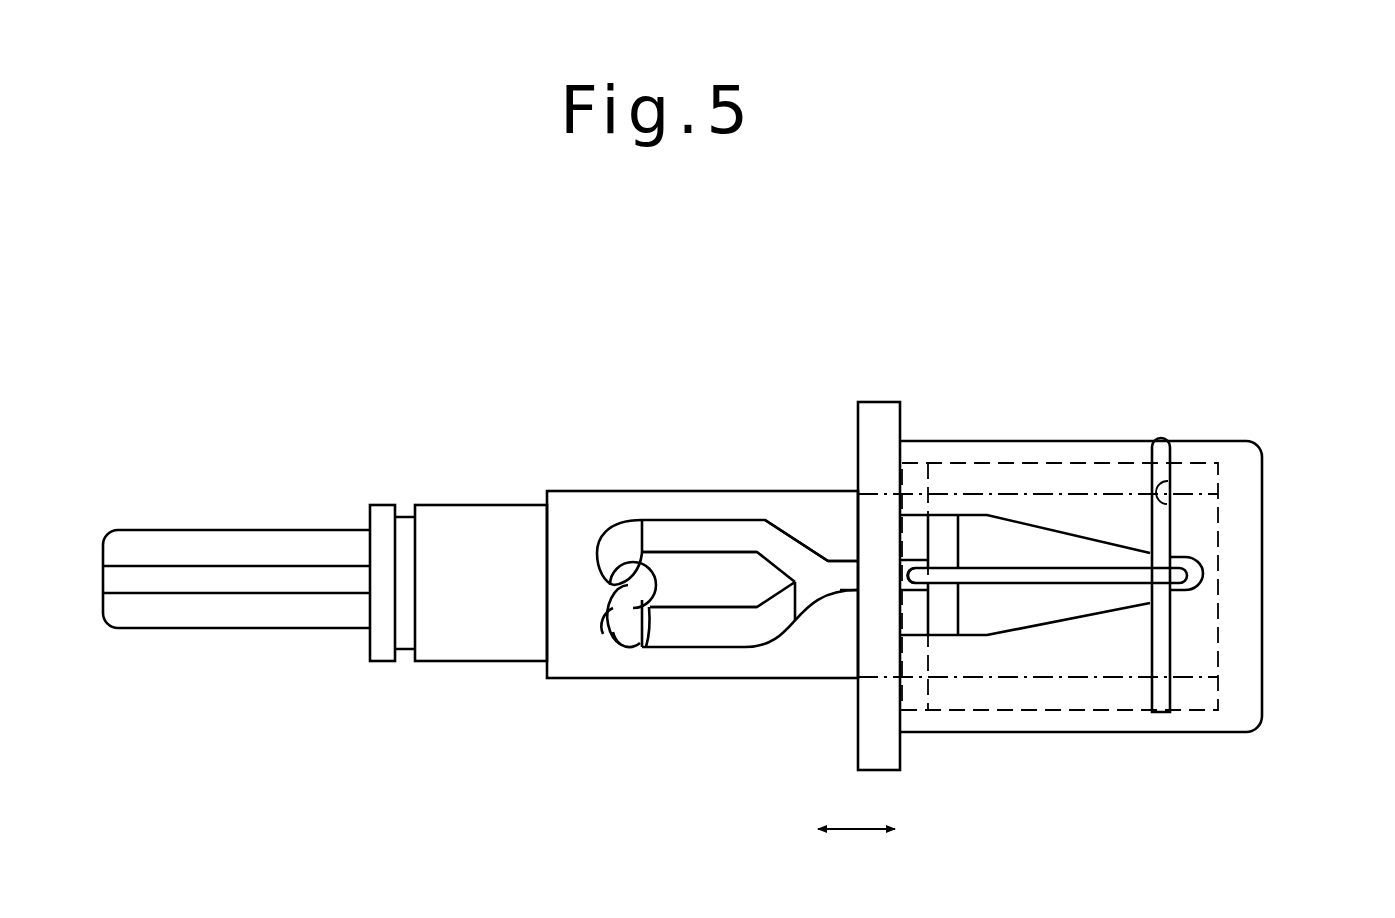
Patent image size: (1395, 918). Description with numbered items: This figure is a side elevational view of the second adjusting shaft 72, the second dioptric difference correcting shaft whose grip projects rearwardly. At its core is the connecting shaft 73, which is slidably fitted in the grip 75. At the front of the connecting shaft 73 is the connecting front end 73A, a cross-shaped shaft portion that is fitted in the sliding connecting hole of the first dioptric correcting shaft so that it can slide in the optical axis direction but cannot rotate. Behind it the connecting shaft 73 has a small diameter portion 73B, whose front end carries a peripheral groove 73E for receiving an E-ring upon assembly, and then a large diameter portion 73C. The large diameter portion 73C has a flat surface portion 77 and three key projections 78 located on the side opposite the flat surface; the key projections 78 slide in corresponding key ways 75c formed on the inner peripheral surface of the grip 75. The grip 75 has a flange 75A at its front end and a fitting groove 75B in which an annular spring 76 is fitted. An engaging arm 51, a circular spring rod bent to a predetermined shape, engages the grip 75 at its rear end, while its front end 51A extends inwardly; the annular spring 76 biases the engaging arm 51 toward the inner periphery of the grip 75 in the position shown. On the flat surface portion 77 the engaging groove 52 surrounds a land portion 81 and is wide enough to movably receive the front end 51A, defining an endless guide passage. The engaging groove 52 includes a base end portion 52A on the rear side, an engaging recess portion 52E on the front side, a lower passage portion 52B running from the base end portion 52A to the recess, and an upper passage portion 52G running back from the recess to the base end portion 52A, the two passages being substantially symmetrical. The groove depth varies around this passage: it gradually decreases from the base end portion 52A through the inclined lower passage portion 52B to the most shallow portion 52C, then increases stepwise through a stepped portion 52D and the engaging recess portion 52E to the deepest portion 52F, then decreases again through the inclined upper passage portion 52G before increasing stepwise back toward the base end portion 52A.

The second adjusting shaft 72 is at (862, 267).
The connecting shaft 73 is at (680, 438).
The connecting front end 73A is at (265, 532).
The small diameter portion 73B is at (485, 513).
The large diameter portion 73C is at (573, 492).
The peripheral groove 73E is at (405, 515).
The engaging groove 52 is at (672, 655).
The base end portion 52A is at (847, 585).
The lower passage portion 52B is at (742, 635).
The most shallow portion 52C is at (620, 640).
The stepped portion 52D is at (612, 612).
The engaging recess portion 52E is at (650, 648).
The deepest portion 52F is at (618, 522).
The upper passage portion 52G is at (767, 520).
The land portion 81 is at (703, 567).
The flat surface portion 77 is at (773, 672).
The grip 75 is at (1093, 410).
The flange 75A is at (882, 410).
The fitting groove 75B is at (1166, 490).
The key way 75c is at (1218, 498).
The key projection 78 is at (915, 467).
The engaging arm 51 is at (1050, 577).
The front end of engaging arm 51A is at (930, 572).
The annular spring 76 is at (1160, 697).